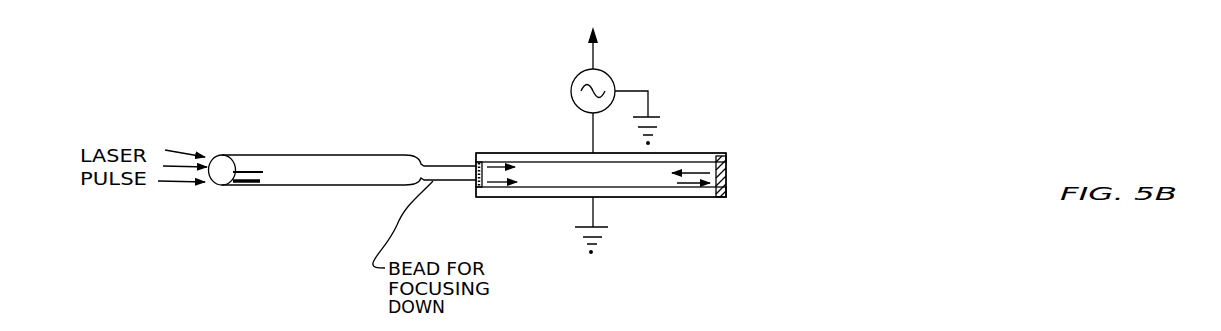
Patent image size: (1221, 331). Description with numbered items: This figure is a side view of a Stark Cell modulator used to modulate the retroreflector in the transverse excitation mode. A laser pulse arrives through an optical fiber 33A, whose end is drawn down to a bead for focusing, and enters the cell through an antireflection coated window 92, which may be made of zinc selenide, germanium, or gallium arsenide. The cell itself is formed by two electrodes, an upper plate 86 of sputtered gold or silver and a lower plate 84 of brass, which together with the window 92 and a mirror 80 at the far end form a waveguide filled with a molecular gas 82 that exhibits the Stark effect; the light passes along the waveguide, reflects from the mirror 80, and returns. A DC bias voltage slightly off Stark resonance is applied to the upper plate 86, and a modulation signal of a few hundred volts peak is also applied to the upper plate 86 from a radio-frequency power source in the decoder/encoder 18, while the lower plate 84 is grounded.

The optical fiber 33A is at (262, 155).
The antireflection coated window 92 is at (476, 162).
The molecular gas 82 is at (540, 177).
The upper plate 86 is at (683, 153).
The lower plate 84 is at (658, 198).
The mirror 80 is at (728, 161).
The decoder/encoder 18 is at (593, 55).